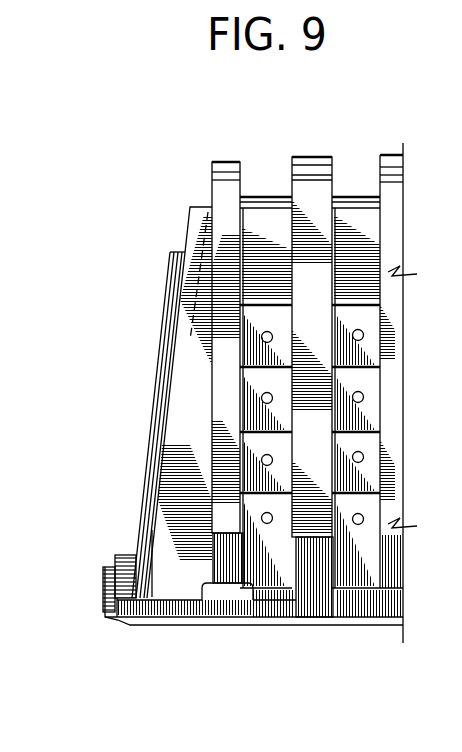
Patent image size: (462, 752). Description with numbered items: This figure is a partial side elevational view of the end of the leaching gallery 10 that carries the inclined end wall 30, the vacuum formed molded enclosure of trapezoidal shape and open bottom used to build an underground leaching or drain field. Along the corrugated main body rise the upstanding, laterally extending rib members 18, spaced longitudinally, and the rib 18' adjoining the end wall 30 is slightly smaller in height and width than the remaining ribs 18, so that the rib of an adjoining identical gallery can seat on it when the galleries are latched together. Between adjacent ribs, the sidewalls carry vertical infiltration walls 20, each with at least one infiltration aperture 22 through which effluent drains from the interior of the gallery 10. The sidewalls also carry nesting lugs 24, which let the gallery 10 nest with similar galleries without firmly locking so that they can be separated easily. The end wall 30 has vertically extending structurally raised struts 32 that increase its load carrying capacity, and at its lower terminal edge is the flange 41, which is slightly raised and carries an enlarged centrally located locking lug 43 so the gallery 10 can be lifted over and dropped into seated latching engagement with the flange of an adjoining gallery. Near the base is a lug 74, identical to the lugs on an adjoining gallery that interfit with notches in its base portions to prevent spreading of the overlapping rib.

The leaching gallery 10 is at (170, 198).
The rib 18' is at (211, 322).
The rib member 18 is at (351, 377).
The infiltration wall 20 is at (343, 380).
The infiltration aperture 22 is at (362, 452).
The nesting lug 24 is at (323, 588).
The inclined end wall 30 is at (168, 330).
The strut 32 is at (148, 465).
The flange 41 is at (108, 618).
The locking lug 43 is at (128, 557).
The lug 74 is at (228, 592).